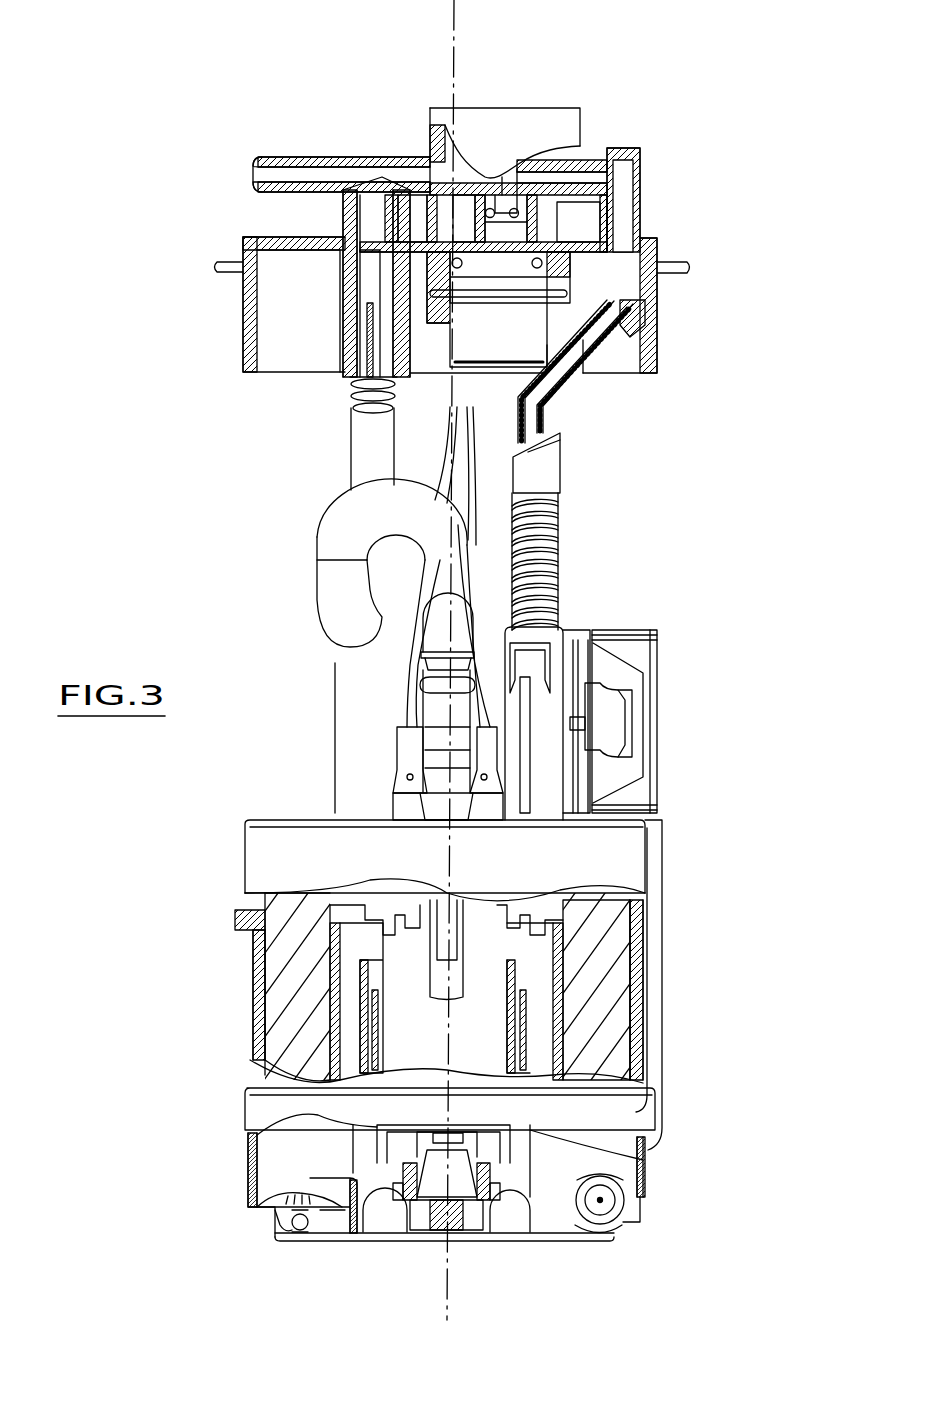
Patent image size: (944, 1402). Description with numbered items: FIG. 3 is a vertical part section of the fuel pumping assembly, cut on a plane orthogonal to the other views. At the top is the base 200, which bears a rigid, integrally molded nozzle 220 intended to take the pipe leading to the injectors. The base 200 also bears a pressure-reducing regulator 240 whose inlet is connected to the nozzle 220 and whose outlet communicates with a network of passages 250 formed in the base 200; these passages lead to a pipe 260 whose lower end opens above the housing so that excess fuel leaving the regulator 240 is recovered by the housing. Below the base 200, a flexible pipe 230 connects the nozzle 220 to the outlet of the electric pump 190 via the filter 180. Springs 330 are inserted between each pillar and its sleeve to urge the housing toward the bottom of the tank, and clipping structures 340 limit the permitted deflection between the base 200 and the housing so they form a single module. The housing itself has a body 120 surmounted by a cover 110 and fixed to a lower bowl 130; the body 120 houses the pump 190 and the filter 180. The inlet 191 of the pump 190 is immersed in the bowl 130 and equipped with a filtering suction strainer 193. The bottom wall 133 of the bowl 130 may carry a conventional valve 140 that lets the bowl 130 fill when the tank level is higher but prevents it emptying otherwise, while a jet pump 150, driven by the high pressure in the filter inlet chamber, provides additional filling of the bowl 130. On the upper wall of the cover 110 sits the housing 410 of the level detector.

The cover 110 is at (620, 867).
The body 120 is at (665, 1032).
The lower bowl 130 is at (645, 1185).
The bottom wall 133 is at (391, 1249).
The valve 140 is at (271, 1239).
The jet pump 150 is at (647, 1235).
The filter 180 is at (597, 1053).
The electric pump 190 is at (480, 1027).
The inlet 191 is at (487, 1244).
The filtering suction strainer 193 is at (510, 1247).
The base 200 is at (667, 335).
The rigid nozzle 220 is at (323, 177).
The flexible pipe 230 is at (337, 545).
The pressure-reducing regulator 240 is at (530, 347).
The network of passages 250 is at (629, 219).
The pipe 260 is at (621, 341).
The spring 330 is at (570, 560).
The clipping structure 340 is at (572, 635).
The housing 410 is at (645, 652).